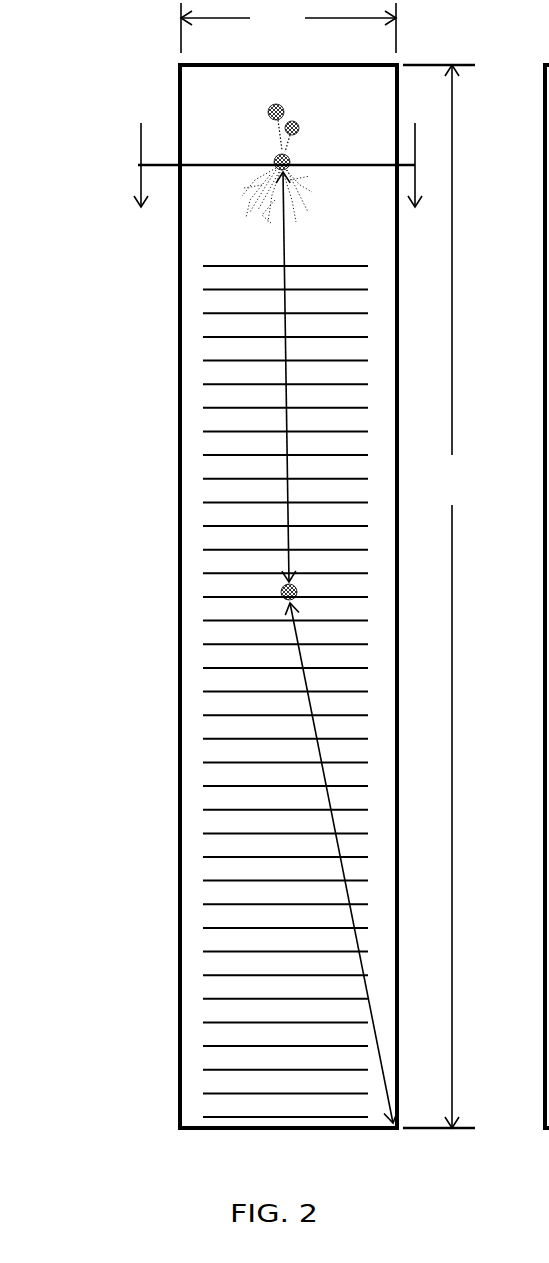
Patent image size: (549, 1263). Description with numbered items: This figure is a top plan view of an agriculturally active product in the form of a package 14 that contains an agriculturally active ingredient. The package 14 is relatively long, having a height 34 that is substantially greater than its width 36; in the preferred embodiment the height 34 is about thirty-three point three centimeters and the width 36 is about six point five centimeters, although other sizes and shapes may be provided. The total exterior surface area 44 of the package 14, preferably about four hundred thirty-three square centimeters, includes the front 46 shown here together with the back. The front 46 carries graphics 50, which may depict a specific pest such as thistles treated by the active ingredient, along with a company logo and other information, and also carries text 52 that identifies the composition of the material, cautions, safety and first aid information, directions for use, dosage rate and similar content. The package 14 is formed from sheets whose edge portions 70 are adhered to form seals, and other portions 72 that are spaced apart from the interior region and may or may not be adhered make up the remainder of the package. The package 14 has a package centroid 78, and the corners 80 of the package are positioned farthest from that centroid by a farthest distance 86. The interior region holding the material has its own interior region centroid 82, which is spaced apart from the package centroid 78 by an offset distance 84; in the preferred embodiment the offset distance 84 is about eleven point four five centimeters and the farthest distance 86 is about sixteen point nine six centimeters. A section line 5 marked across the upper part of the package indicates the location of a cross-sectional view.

The package 14 is at (153, 398).
The corners 80 is at (172, 70).
The edge portions 70 is at (200, 212).
The other portions 72 is at (318, 1080).
The total exterior surface area 44 is at (193, 628).
The front 46 is at (185, 895).
The text 52 is at (215, 312).
The graphics 50 is at (238, 135).
The interior region centroid 82 is at (298, 156).
The package centroid 78 is at (272, 590).
The offset distance 84 is at (286, 396).
The farthest distance 86 is at (313, 707).
The section line 5- 5 is at (276, 165).
The width 36 is at (288, 28).
The height 34 is at (439, 596).